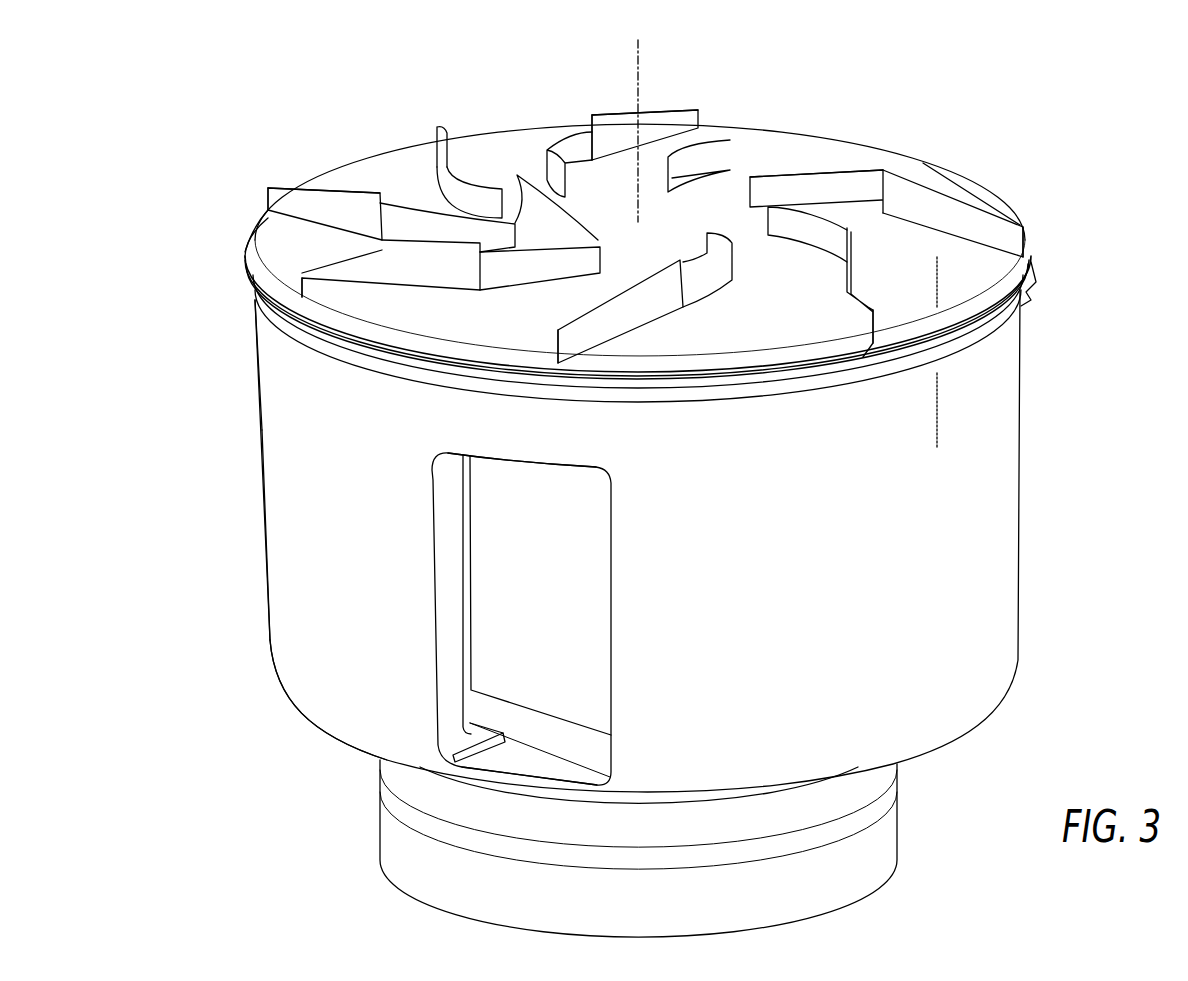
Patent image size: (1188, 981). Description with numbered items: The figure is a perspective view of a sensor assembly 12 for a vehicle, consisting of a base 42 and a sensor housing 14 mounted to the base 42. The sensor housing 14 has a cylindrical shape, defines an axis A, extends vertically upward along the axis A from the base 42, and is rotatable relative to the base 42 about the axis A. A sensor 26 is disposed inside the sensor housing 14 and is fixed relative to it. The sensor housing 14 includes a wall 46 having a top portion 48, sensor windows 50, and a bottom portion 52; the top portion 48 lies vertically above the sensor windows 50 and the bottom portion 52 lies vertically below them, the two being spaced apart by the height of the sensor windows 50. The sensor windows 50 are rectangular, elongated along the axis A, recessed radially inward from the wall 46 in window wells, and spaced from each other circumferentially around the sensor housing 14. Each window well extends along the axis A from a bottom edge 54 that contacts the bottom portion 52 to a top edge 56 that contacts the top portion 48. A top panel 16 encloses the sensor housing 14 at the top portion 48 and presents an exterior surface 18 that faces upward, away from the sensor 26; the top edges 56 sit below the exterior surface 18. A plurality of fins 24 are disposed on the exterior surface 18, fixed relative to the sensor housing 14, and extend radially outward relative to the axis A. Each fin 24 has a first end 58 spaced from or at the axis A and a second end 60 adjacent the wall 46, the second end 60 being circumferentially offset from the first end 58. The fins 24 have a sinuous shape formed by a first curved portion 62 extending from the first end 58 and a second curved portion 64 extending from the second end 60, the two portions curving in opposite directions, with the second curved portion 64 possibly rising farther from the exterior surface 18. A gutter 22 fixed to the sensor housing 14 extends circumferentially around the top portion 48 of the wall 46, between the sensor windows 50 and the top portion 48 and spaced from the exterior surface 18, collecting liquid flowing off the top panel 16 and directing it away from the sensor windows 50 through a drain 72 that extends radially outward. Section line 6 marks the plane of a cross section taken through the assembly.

The sensor assembly 12 is at (262, 100).
The sensor housing 14 is at (257, 467).
The top panel 16 is at (249, 237).
The exterior surface 18 is at (625, 214).
The gutter 22 is at (428, 382).
The fins 24 is at (364, 182).
The sensor 26 is at (527, 707).
The base 42 is at (378, 848).
The wall 46 is at (268, 620).
The top portion 48 is at (257, 402).
The sensor windows 50 is at (628, 583).
The bottom portion 52 is at (337, 743).
The bottom edge 54 is at (543, 463).
The top edge 56 is at (530, 780).
The first end 58 is at (518, 178).
The second end 60 is at (268, 190).
The first curved portion 62 is at (417, 217).
The second curved portion 64 is at (327, 187).
The drain 72 is at (1033, 287).
The section line 6- 6 is at (992, 230).
The axis A is at (638, 116).